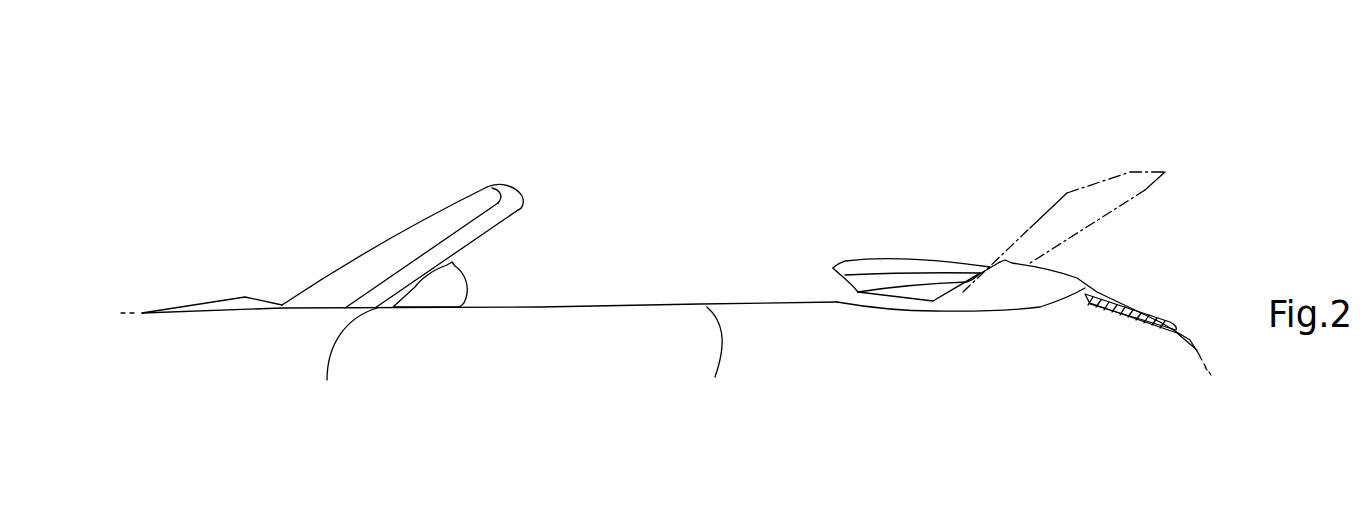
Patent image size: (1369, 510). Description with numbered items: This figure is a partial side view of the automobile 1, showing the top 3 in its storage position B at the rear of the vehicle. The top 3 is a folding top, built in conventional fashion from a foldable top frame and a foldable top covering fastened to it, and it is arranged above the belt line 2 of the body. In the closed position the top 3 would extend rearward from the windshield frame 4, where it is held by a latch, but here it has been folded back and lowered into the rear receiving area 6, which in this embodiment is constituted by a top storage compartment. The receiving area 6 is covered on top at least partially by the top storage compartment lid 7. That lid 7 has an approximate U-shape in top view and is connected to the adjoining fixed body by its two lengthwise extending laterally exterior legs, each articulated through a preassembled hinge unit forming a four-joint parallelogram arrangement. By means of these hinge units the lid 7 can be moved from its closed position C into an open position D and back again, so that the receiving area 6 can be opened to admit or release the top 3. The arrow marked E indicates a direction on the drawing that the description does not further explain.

The automobile 1 is at (402, 209).
The belt line 2 is at (630, 309).
The top 3 is at (900, 250).
The windshield frame 4 is at (505, 186).
The rear receiving area 6 is at (1016, 351).
The top storage compartment lid 7 is at (1042, 292).
The storage position B is at (940, 250).
The closed position C is at (1090, 272).
The open position D is at (1128, 162).
The direction of travel E is at (690, 141).